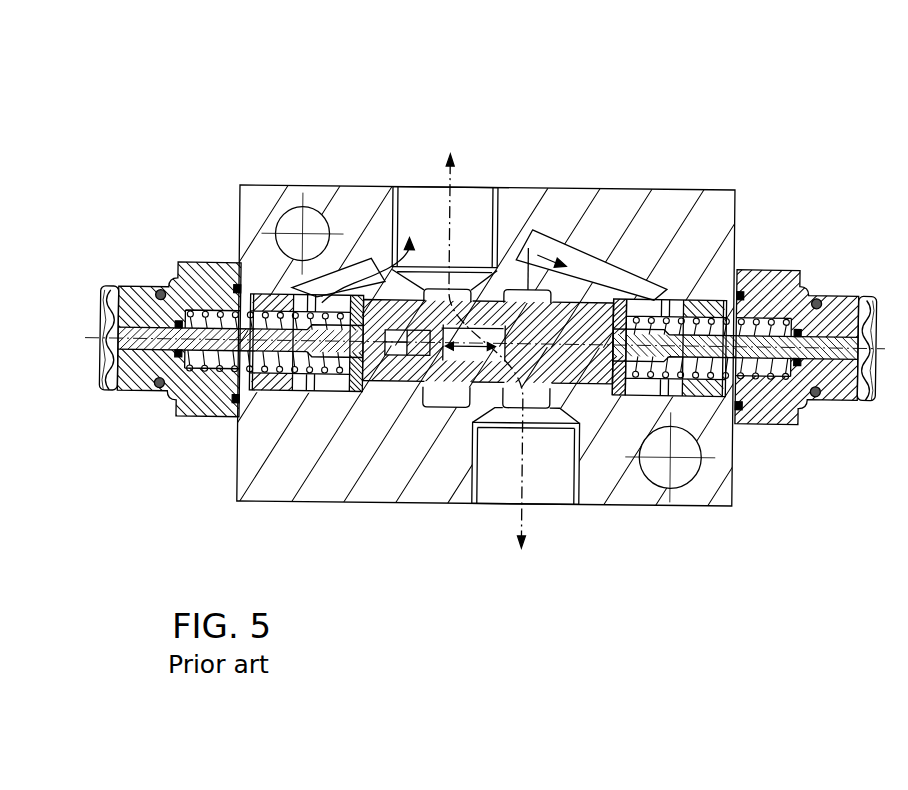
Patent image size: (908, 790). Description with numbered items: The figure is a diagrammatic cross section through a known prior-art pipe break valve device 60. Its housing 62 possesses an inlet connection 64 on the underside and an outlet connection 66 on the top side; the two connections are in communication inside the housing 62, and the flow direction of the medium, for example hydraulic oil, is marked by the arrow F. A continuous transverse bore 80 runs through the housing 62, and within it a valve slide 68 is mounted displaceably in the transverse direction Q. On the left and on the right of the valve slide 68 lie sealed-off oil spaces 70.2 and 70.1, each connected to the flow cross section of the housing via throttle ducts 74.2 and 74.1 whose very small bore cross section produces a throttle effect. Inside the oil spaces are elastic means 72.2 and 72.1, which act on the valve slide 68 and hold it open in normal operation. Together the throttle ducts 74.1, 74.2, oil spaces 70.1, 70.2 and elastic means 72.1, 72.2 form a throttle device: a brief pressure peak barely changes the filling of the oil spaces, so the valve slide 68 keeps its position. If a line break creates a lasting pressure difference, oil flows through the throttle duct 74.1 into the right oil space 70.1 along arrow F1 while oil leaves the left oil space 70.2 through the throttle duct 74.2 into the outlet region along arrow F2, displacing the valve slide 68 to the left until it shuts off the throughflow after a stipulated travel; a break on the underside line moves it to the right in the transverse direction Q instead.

The pipe break valve device 60 is at (777, 108).
The housing 62 is at (727, 222).
The inlet connection 64 is at (572, 501).
The outlet connection 66 is at (494, 187).
The valve slide 68 is at (395, 390).
The right oil space 70.1 is at (683, 298).
The left oil space 70.2 is at (315, 298).
The elastic means 72.1 is at (715, 298).
The elastic means 72.2 is at (265, 296).
The throttle duct 74.1 is at (640, 315).
The throttle duct 74.2 is at (330, 315).
The transverse bore 80 is at (622, 300).
The flow direction arrow F is at (450, 175).
The oil inflow arrow F1 is at (530, 245).
The oil outflow arrow F2 is at (409, 236).
The transverse direction Q is at (443, 372).